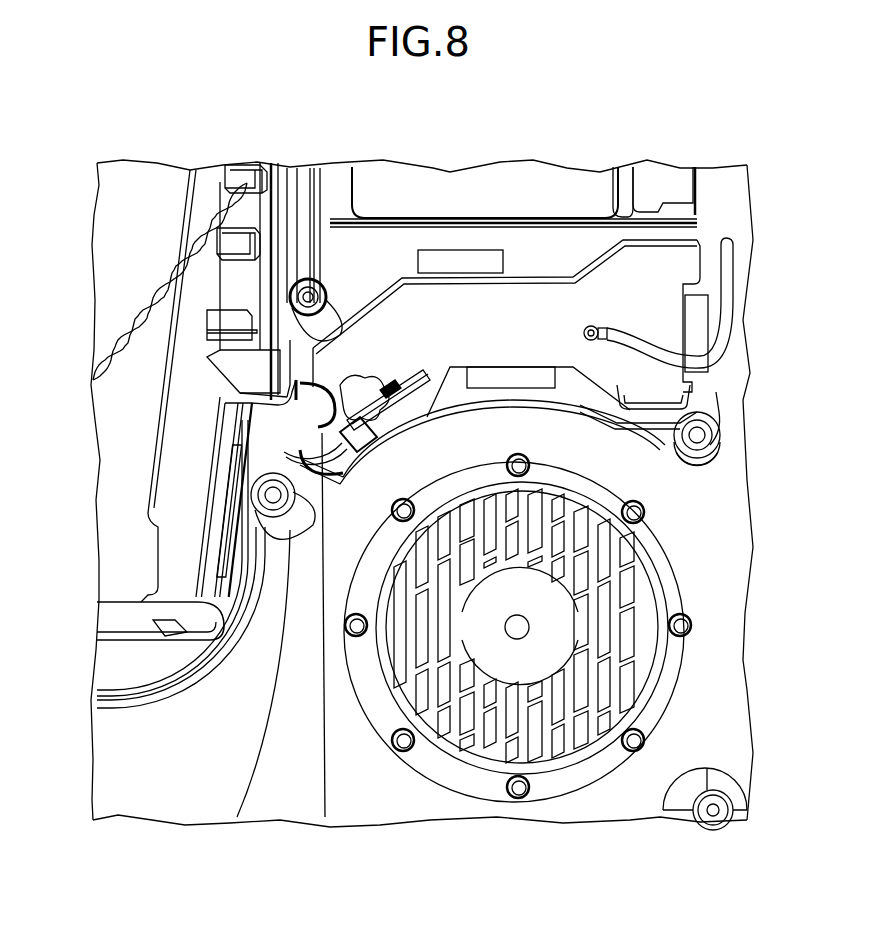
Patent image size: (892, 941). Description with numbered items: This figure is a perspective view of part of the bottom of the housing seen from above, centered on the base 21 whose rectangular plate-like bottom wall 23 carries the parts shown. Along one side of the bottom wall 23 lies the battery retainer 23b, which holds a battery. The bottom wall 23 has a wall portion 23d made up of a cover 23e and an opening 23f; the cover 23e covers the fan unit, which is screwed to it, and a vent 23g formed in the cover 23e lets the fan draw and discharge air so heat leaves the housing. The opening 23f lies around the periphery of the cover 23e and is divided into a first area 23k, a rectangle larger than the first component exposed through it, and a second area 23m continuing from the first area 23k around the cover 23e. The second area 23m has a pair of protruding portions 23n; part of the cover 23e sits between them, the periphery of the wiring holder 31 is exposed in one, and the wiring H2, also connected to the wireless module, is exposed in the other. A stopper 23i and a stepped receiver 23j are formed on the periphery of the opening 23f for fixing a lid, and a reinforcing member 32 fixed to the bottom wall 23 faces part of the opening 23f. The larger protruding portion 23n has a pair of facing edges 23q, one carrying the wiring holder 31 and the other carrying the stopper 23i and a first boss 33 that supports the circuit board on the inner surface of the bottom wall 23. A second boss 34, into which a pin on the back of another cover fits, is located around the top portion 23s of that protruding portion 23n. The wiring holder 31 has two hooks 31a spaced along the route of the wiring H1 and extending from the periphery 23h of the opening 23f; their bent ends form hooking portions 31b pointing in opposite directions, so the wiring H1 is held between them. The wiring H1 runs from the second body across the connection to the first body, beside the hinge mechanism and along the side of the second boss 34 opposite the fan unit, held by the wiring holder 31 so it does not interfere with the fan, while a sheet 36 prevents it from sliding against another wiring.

The base 21 is at (273, 800).
The bottom wall 23 is at (370, 798).
The battery retainer 23b is at (110, 618).
The wall portion 23d is at (732, 398).
The cover 23e is at (670, 503).
The opening 23f is at (670, 268).
The vent 23g is at (627, 663).
The periphery 23h is at (675, 318).
The stopper 23i is at (677, 253).
The receiver 23j is at (577, 385).
The first area 23k is at (650, 265).
The second area 23m is at (300, 440).
The protruding portions 23n is at (325, 817).
The edges 23q is at (295, 401).
The top portion 23s is at (325, 437).
The wiring holder 31 is at (374, 372).
The hooks 31a is at (330, 411).
The hooking portions 31b is at (418, 370).
The reinforcing member 32 is at (525, 250).
The first boss 33 is at (338, 205).
The second boss 34 is at (237, 817).
The sheet 36 is at (230, 496).
The wiring H1 is at (422, 365).
The wiring H2 is at (617, 325).